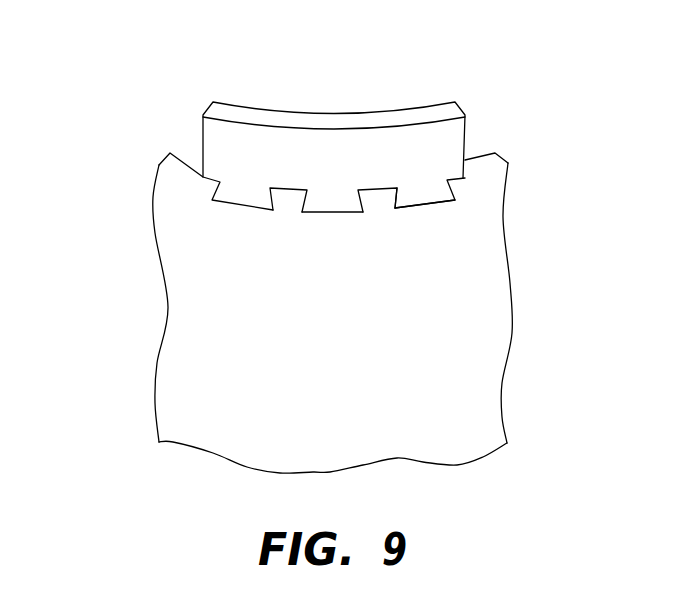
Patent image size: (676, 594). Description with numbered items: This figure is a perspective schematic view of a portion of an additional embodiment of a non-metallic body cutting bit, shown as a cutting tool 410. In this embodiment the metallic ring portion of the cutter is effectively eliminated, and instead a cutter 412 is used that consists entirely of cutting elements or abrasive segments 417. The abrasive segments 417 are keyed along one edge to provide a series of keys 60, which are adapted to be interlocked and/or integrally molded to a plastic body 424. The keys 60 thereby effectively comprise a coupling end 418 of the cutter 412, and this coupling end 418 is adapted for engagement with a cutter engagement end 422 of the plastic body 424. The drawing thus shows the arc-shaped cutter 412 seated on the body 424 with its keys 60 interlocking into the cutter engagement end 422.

The cutting tool 410 is at (130, 274).
The cutter 412 is at (176, 139).
The abrasive segments 417 is at (245, 137).
The coupling end 418 is at (402, 164).
The cutter engagement end 422 is at (490, 160).
The plastic body 424 is at (495, 278).
The keys 60 is at (240, 198).